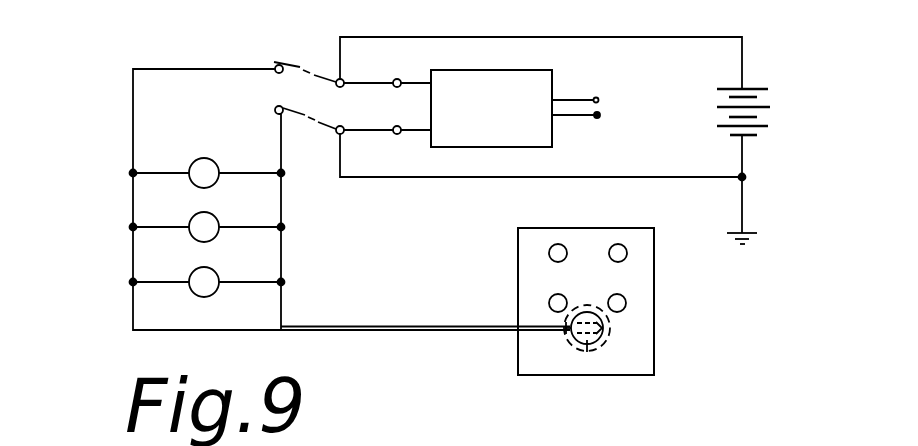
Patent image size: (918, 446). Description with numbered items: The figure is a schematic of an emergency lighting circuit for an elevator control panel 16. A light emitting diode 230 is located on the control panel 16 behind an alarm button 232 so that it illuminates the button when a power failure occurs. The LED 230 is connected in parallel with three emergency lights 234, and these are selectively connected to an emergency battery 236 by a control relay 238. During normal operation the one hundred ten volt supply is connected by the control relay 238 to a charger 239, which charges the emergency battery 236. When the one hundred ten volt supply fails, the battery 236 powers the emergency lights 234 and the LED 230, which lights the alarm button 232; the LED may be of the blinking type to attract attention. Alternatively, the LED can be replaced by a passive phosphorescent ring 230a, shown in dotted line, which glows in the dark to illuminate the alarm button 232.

The control panel 16 is at (654, 362).
The light emitting diode 230 is at (608, 328).
The passive phosphorescent ring 230a is at (590, 304).
The alarm button 232 is at (587, 352).
The emergency lights 234 is at (128, 173).
The emergency battery 236 is at (757, 126).
The control relay 238 is at (302, 63).
The charger 239 is at (520, 85).